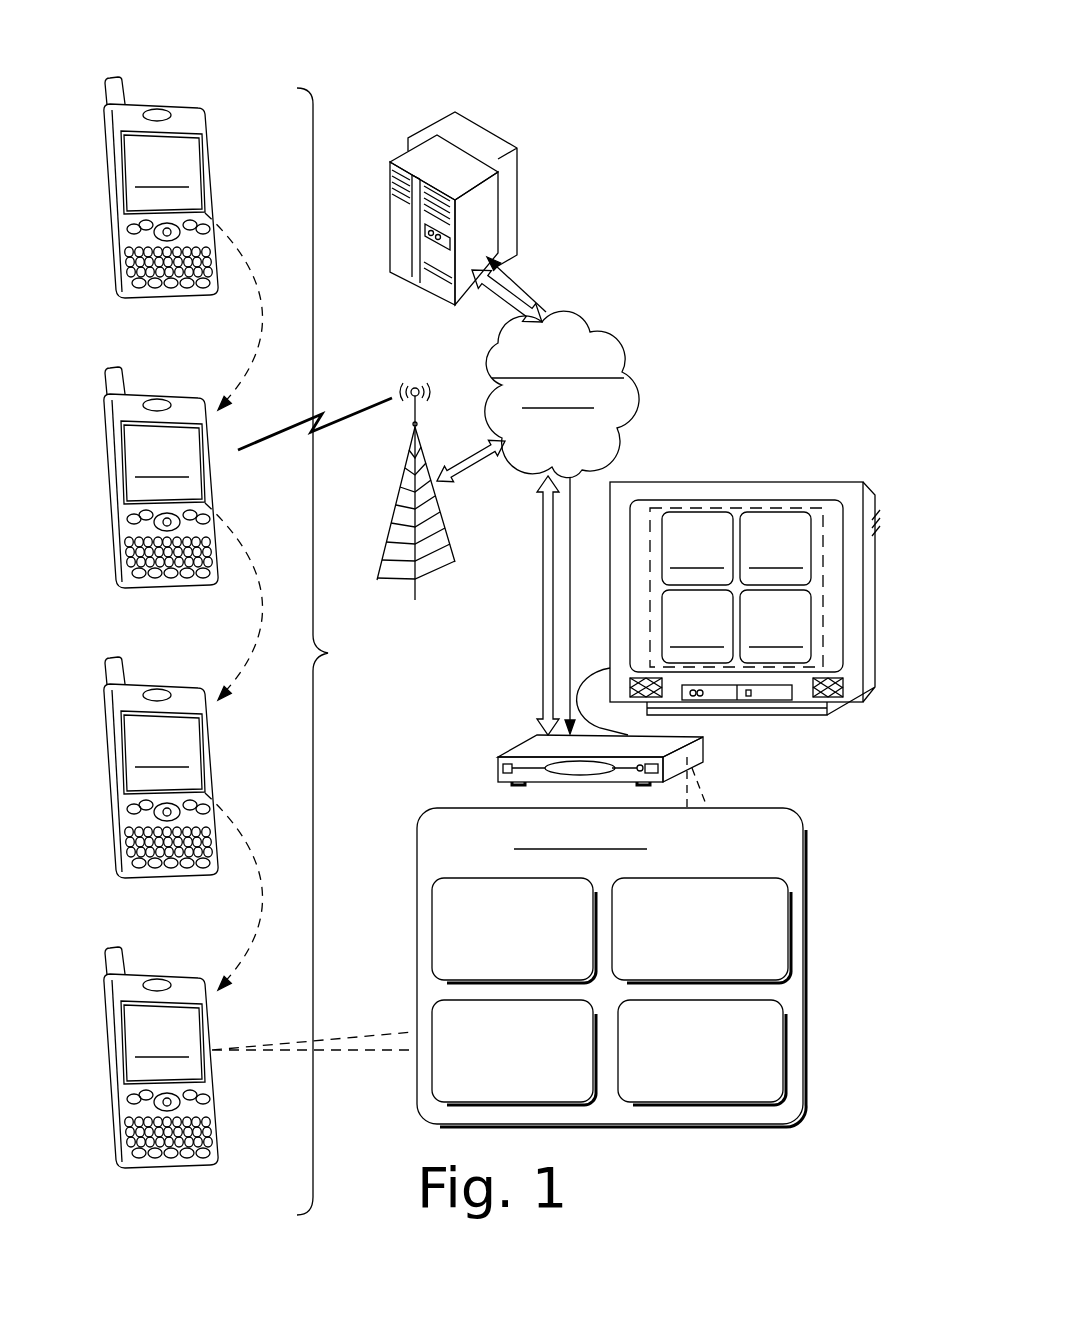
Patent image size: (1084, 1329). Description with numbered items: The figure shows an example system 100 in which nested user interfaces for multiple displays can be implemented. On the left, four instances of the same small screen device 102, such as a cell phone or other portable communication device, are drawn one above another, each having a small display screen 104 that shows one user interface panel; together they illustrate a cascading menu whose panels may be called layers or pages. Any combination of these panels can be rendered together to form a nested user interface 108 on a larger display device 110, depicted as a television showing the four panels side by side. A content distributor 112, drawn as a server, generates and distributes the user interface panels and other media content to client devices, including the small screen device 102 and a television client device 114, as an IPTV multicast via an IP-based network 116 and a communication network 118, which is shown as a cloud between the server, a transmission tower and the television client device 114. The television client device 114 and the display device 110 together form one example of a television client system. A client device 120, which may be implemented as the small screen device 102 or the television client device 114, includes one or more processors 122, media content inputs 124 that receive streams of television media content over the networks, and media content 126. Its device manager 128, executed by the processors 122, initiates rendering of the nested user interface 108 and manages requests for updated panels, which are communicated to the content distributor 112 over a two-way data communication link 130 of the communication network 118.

The system 100 is at (685, 112).
The small screen device 102 is at (226, 84).
The small display screen 104 is at (192, 167).
The nested user interface 108 is at (768, 496).
The display device 110 is at (677, 482).
The content distributor 112 is at (460, 132).
The television client device 114 is at (533, 747).
The IP-based network 116 is at (493, 293).
The communication network 118 is at (540, 446).
The client device 120 is at (705, 849).
The processors 122 is at (494, 968).
The media content inputs 124 is at (682, 971).
The media content 126 is at (682, 1089).
The device manager 128 is at (494, 1089).
The two-way data communication link 130 is at (527, 292).